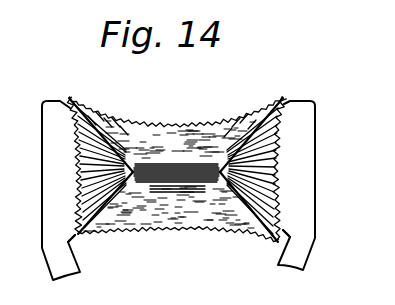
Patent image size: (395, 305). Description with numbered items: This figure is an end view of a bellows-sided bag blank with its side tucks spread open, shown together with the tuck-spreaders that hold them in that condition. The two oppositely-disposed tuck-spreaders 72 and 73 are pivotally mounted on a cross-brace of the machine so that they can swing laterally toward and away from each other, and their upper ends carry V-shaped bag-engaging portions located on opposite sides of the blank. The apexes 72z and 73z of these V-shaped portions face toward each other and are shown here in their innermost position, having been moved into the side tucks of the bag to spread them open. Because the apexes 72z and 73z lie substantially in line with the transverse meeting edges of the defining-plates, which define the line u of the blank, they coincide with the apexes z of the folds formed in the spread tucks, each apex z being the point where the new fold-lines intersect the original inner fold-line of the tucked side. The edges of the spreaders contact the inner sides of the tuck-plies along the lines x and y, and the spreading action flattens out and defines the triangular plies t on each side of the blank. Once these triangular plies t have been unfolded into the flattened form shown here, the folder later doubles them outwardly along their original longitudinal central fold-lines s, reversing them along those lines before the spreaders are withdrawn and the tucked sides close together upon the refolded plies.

The tuck-spreader 72 is at (298, 185).
The tuck-spreader 73 is at (61, 190).
The apex of tuck-spreader 72z is at (220, 172).
The apex of tuck-spreader 73z is at (133, 172).
The longitudinal central fold-line s is at (92, 170).
The triangular ply t is at (97, 185).
The line of fold x is at (115, 146).
The line of fold y is at (107, 200).
The apex of the folds z is at (136, 170).
The line of the blank u is at (175, 176).